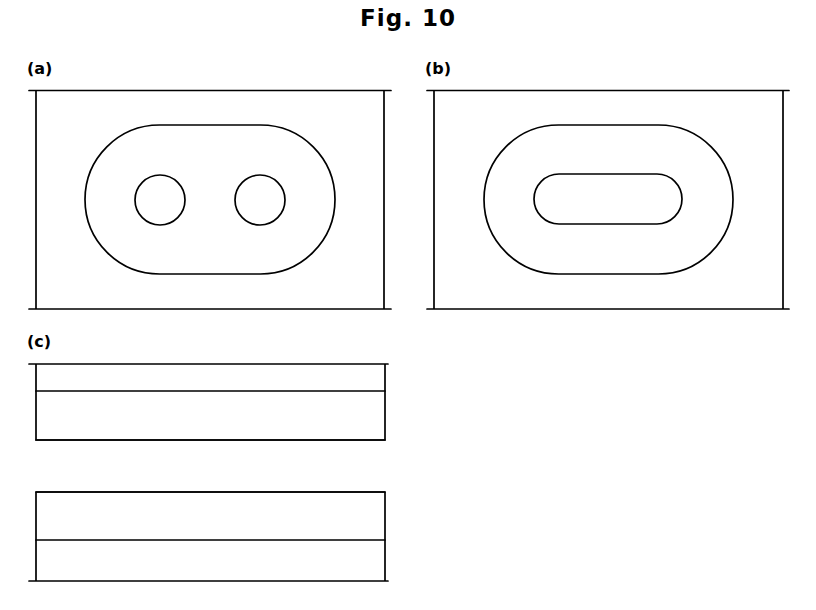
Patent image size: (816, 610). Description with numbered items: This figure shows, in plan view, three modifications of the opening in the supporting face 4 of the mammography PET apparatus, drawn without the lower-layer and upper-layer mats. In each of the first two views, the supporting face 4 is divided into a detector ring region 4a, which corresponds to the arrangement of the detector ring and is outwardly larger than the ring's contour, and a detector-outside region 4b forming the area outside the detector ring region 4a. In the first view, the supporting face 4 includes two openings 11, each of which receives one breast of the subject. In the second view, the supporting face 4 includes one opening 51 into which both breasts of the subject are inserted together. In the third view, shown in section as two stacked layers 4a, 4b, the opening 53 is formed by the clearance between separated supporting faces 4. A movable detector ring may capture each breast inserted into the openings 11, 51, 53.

The supporting face 4 is at (88, 306).
The detector ring region 4a is at (115, 234).
The detector-outside region 4b is at (118, 294).
The opening 11 is at (149, 210).
The opening 51 is at (597, 210).
The opening 53 is at (193, 476).